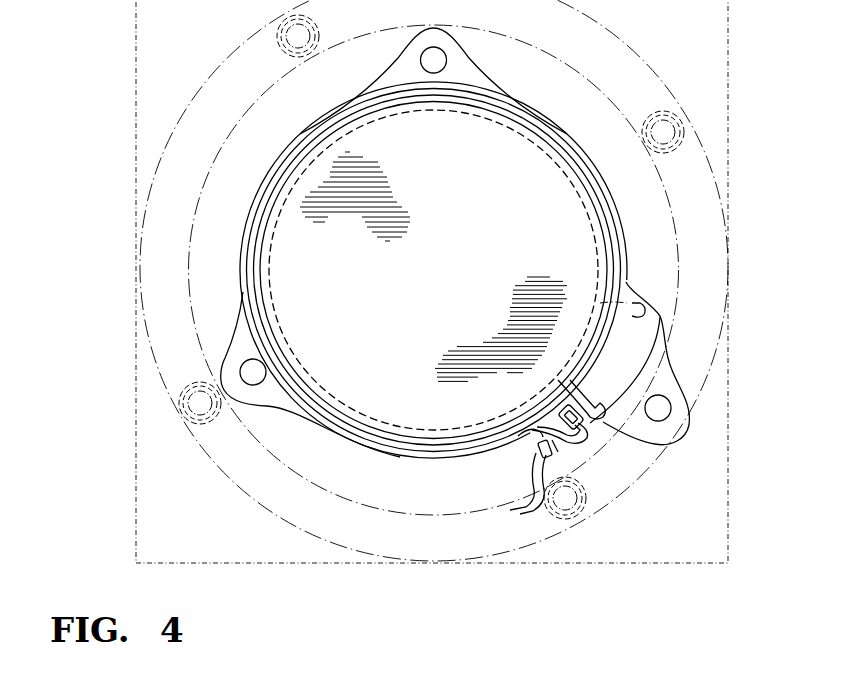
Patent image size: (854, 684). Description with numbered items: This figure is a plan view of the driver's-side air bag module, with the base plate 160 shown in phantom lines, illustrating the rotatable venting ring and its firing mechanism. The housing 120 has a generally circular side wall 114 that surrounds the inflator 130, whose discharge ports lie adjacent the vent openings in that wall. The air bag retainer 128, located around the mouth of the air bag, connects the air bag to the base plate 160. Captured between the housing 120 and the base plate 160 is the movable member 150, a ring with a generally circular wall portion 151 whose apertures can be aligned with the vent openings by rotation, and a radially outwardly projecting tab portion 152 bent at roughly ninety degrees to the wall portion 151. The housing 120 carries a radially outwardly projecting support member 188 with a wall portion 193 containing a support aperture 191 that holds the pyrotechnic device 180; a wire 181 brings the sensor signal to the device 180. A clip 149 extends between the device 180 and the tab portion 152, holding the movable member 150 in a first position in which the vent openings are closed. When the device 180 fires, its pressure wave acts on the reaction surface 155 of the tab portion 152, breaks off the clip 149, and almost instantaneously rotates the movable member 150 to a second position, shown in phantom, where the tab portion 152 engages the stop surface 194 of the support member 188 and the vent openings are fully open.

The housing 120 is at (542, 108).
The side wall 114 is at (624, 218).
The inflator 130 is at (578, 255).
The support member 188 is at (648, 297).
The stop surface 194 is at (663, 315).
The tab portion 152 is at (617, 305).
The reaction surface 155 is at (607, 422).
The clip 149 is at (580, 436).
The support aperture 191 is at (555, 449).
The pyrotechnic device 180 is at (552, 452).
The wire 181 is at (527, 510).
The wall portion 193 is at (535, 433).
The movable member 150 is at (398, 438).
The wall portion 151 is at (437, 445).
The air bag retainer 128 is at (315, 502).
The base plate 160 is at (650, 565).